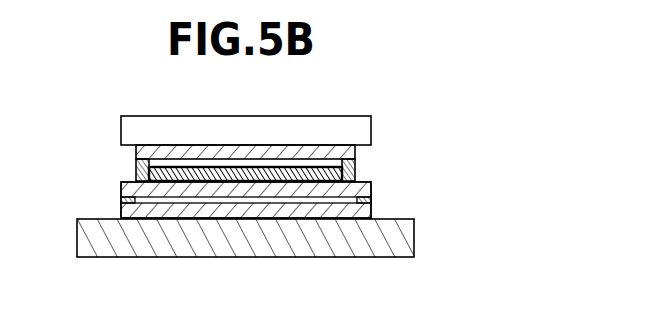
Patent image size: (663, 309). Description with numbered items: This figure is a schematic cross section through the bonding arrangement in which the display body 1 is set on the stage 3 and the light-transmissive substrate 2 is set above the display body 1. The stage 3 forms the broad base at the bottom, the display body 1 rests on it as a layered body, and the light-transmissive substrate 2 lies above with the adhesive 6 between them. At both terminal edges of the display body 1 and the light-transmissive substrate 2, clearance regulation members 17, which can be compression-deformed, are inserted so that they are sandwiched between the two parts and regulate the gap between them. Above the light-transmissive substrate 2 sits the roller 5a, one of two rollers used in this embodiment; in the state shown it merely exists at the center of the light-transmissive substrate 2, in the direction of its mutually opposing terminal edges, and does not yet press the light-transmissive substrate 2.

The roller 5a is at (228, 116).
The light-transmissive substrate 2 is at (356, 152).
The clearance regulation member 17 is at (136, 171).
The adhesive 6 is at (251, 182).
The display body 1 is at (390, 188).
The stage 3 is at (332, 252).